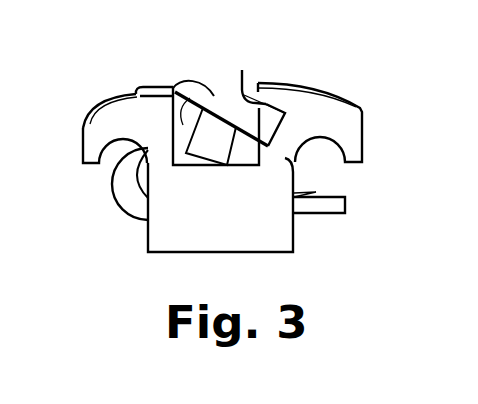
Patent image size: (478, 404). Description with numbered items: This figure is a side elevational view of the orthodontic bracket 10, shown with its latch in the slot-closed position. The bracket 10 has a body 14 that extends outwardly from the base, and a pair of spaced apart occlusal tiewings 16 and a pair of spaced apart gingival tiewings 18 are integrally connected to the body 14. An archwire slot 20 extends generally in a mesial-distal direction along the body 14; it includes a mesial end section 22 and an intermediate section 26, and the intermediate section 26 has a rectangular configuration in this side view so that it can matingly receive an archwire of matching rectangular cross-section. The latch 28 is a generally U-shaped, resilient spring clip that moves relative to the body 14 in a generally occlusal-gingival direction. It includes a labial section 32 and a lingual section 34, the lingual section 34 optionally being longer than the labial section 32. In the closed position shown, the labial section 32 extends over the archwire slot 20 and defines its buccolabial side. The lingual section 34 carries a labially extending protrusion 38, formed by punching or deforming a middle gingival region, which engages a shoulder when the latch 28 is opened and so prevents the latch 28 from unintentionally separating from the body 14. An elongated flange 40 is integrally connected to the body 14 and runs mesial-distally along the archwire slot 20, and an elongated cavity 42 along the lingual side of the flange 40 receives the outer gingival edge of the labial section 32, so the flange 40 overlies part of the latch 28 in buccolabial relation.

The orthodontic bracket 10 is at (334, 38).
The body 14 is at (147, 236).
The occlusal tiewings 16 is at (93, 142).
The gingival tiewings 18 is at (360, 108).
The archwire slot 20 is at (197, 133).
The mesial end section 22 is at (188, 98).
The intermediate section 26 is at (226, 114).
The latch 28 is at (122, 195).
The labial section 32 is at (243, 125).
The lingual section 34 is at (322, 204).
The protrusion 38 is at (307, 193).
The flange 40 is at (282, 83).
The cavity 42 is at (262, 78).